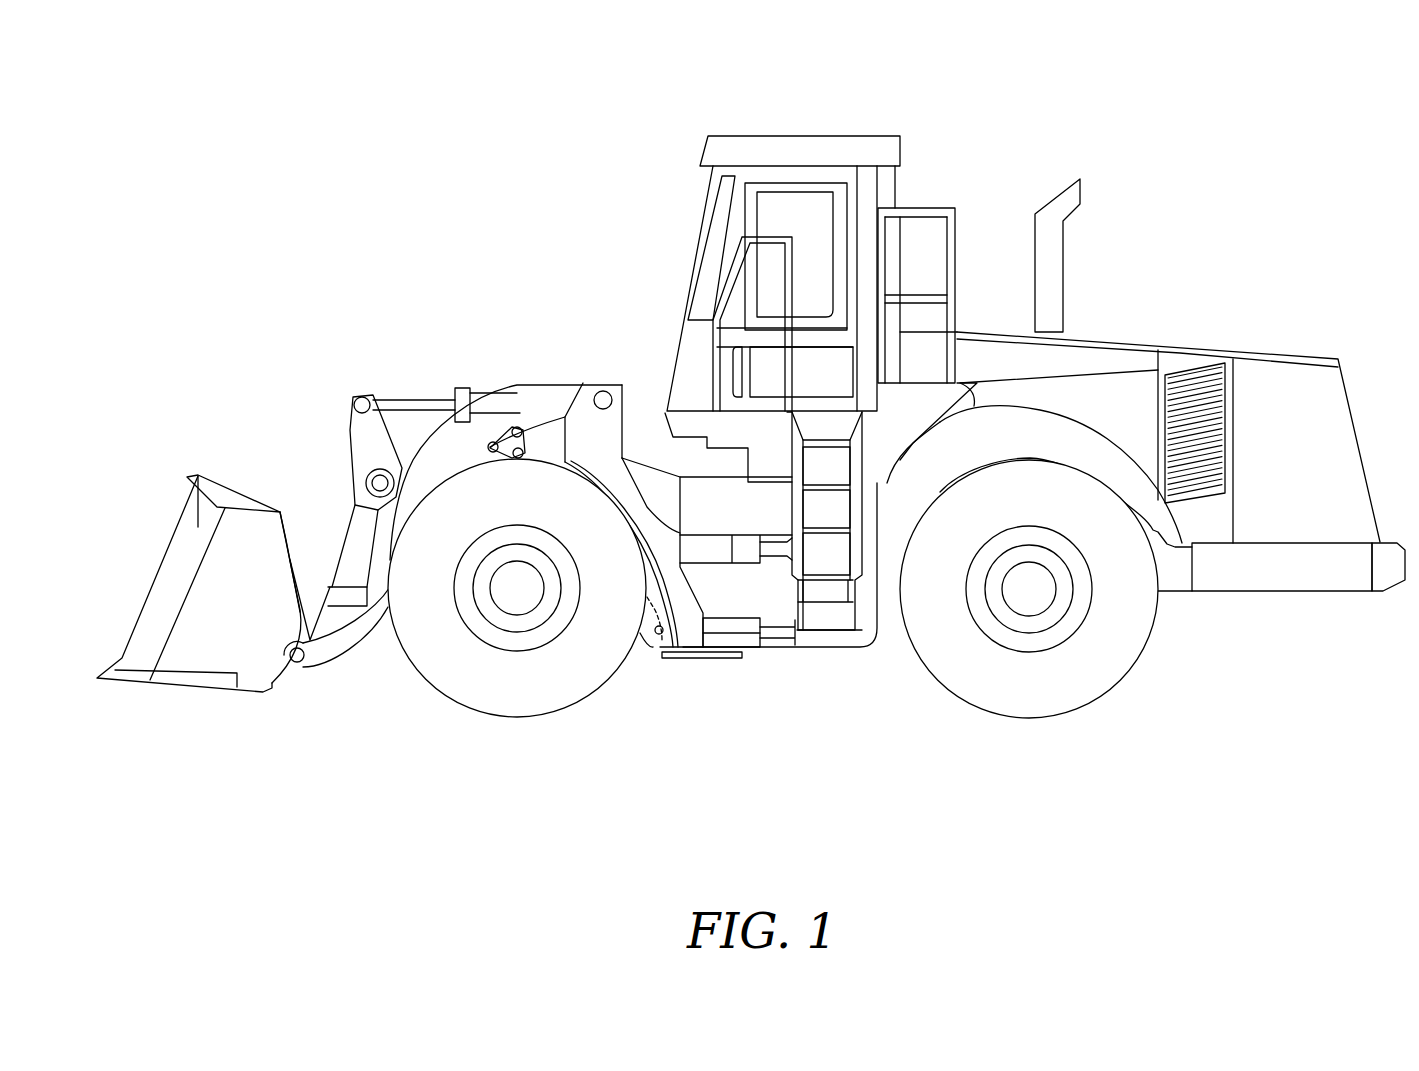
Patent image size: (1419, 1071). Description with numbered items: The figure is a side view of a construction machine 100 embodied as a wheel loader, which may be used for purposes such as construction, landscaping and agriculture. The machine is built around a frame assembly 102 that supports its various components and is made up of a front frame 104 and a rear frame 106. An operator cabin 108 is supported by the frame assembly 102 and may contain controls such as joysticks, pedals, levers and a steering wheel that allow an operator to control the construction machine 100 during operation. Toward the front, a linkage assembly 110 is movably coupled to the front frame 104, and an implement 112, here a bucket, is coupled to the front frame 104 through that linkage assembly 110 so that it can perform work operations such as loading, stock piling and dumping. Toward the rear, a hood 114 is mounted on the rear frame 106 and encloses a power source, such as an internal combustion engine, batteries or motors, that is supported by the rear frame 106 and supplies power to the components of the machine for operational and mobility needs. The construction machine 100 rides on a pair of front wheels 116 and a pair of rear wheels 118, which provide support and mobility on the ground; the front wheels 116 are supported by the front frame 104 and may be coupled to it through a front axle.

The construction machine 100 is at (258, 205).
The frame assembly 102 is at (683, 767).
The front frame 104 is at (677, 684).
The rear frame 106 is at (886, 662).
The operator cabin 108 is at (798, 142).
The linkage assembly 110 is at (331, 470).
The implement 112 is at (225, 619).
The hood 114 is at (1287, 378).
The front wheels 116 is at (472, 710).
The rear wheels 118 is at (1025, 700).